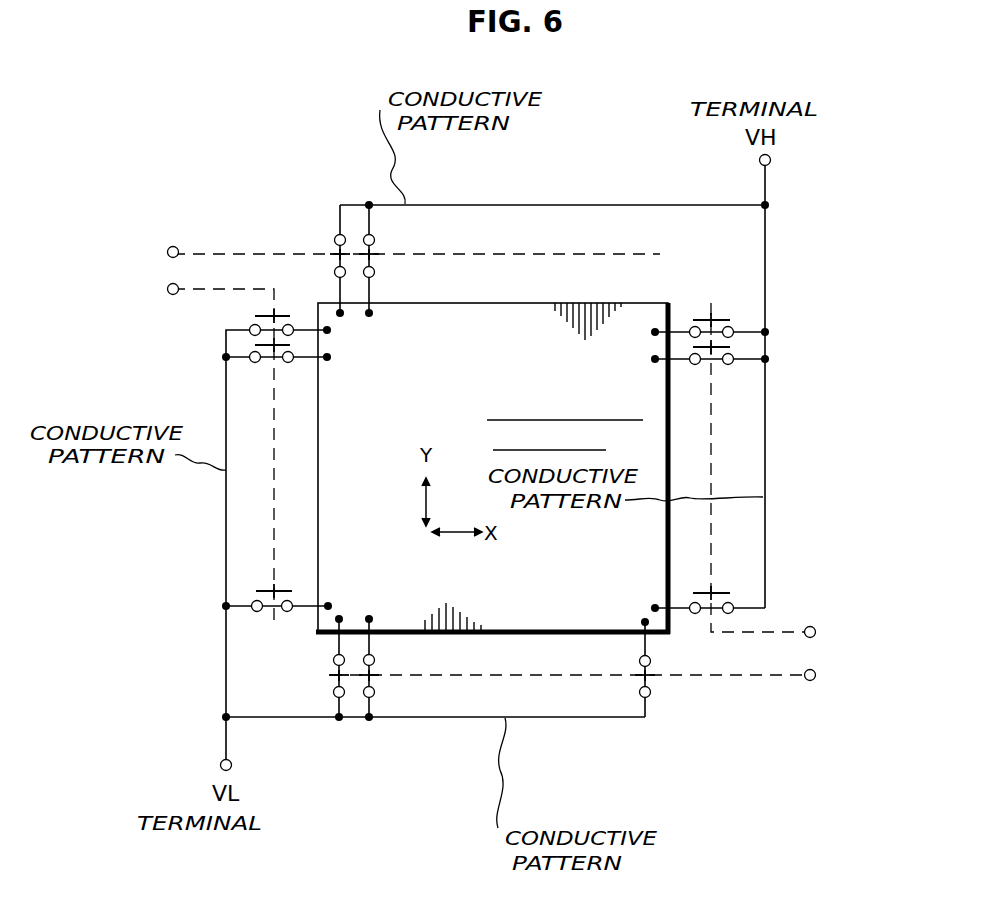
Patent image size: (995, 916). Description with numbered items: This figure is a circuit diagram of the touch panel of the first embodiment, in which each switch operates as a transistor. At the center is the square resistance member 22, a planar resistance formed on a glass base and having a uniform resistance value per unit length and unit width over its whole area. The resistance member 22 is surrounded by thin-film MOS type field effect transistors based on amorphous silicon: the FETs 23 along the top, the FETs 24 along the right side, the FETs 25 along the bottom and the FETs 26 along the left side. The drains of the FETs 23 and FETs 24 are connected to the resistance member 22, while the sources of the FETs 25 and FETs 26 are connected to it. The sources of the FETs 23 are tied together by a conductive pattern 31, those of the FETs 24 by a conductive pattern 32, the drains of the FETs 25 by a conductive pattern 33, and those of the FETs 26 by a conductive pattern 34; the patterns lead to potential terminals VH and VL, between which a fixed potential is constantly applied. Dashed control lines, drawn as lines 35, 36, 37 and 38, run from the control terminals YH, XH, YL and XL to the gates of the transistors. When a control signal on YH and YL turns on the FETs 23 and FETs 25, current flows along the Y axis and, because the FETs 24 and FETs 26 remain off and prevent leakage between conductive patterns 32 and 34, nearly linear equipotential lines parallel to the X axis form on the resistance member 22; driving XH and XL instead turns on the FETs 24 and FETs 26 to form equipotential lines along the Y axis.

The resistance member 22 is at (518, 375).
The FETs 23 is at (353, 247).
The FETs 24 is at (728, 345).
The FETs 25 is at (357, 690).
The FETs 26 is at (255, 312).
The conductive pattern 31 is at (485, 204).
The conductive pattern 32 is at (765, 410).
The conductive pattern 33 is at (470, 718).
The conductive pattern 34 is at (226, 497).
The control line YH 35 is at (528, 252).
The control line XH 36 is at (712, 466).
The control line YL 37 is at (545, 676).
The control line XL 38 is at (274, 522).